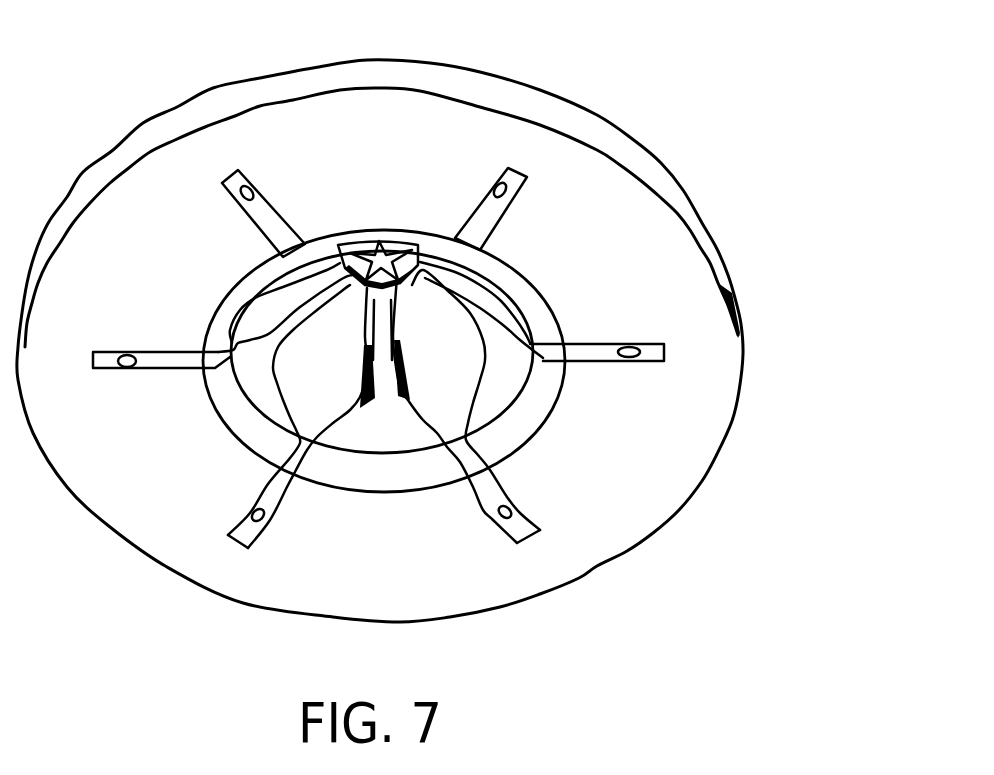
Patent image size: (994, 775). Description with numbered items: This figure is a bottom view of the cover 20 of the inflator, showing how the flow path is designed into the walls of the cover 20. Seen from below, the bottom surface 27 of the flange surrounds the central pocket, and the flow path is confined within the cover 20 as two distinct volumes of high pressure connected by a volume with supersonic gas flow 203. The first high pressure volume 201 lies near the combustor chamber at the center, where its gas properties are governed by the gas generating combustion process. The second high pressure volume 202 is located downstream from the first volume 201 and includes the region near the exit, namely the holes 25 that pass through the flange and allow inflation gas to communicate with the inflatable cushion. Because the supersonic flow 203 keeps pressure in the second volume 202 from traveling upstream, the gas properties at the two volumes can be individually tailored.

The cover 20 is at (624, 106).
The bottom surface 27 is at (492, 130).
The first high pressure volume 201 is at (425, 258).
The second high pressure volume 202 is at (605, 350).
The holes 25 is at (655, 363).
The volume with supersonic gas flow 203 is at (453, 367).